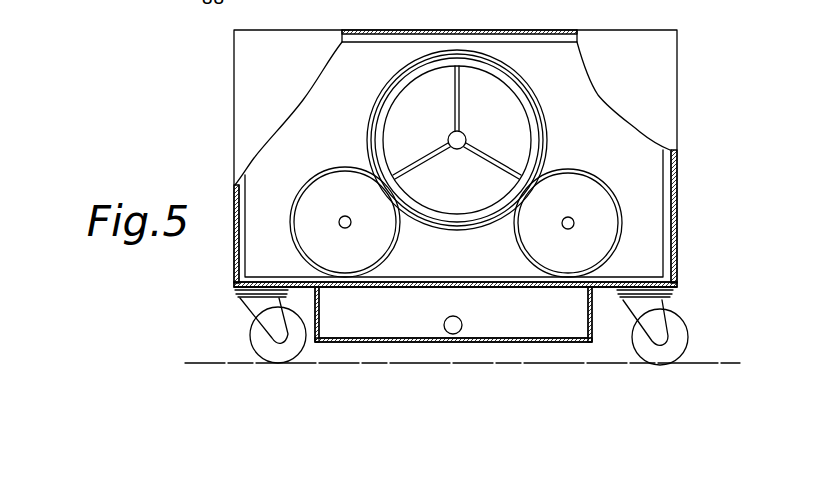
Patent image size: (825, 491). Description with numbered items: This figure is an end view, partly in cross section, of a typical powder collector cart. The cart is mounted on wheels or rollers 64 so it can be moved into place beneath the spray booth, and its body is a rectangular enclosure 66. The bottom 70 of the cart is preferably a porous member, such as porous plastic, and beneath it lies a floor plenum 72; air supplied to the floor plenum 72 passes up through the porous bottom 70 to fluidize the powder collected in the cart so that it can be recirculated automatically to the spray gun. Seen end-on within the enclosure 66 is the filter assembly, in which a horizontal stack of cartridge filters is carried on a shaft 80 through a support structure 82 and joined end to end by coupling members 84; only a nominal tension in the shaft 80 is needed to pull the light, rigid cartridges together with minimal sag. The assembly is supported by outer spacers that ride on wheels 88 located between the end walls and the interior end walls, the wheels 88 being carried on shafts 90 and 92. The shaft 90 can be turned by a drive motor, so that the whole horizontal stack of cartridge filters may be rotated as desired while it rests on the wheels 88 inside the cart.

The wheels or rollers 64 is at (257, 333).
The rectangular enclosure 66 is at (234, 103).
The bottom 70 is at (450, 283).
The floor plenum 72 is at (415, 320).
The shaft 80 is at (492, 157).
The support structure 82 is at (428, 155).
The coupling members 84 is at (408, 62).
The wheels 88 is at (330, 172).
The shaft 90 is at (574, 221).
The shaft 92 is at (339, 219).